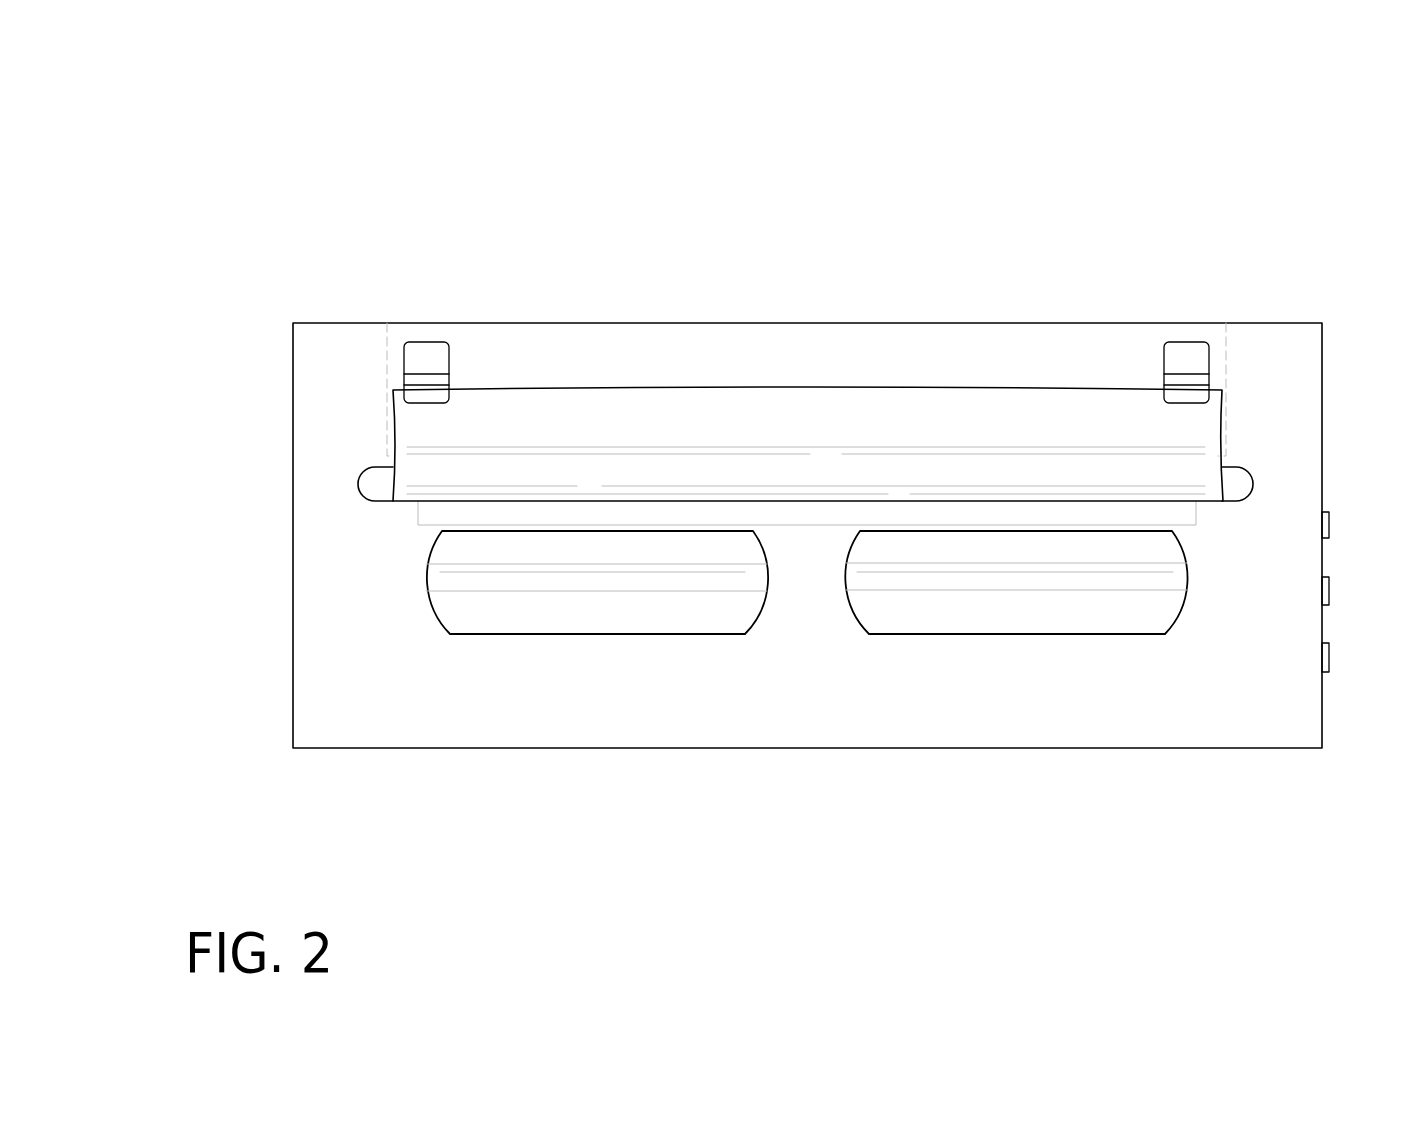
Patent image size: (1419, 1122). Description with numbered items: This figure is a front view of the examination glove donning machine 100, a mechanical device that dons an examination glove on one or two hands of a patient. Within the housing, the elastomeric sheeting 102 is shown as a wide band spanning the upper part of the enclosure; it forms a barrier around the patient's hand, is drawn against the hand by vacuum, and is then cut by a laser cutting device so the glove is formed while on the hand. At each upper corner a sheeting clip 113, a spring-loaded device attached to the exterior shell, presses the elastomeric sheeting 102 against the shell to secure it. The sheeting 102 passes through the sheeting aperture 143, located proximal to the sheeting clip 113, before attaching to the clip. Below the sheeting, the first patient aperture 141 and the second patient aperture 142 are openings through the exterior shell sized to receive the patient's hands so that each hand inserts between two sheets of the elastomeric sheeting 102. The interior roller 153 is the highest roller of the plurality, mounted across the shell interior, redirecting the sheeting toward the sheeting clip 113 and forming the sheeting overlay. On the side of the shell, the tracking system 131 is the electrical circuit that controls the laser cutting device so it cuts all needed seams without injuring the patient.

The examination glove donning machine 100 is at (127, 232).
The elastomeric sheeting 102 is at (1190, 433).
The sheeting clip 113 is at (1188, 355).
The tracking system 131 is at (1335, 592).
The first patient aperture 141 is at (602, 621).
The second patient aperture 142 is at (942, 622).
The sheeting aperture 143 is at (1243, 482).
The interior roller 153 is at (1115, 578).